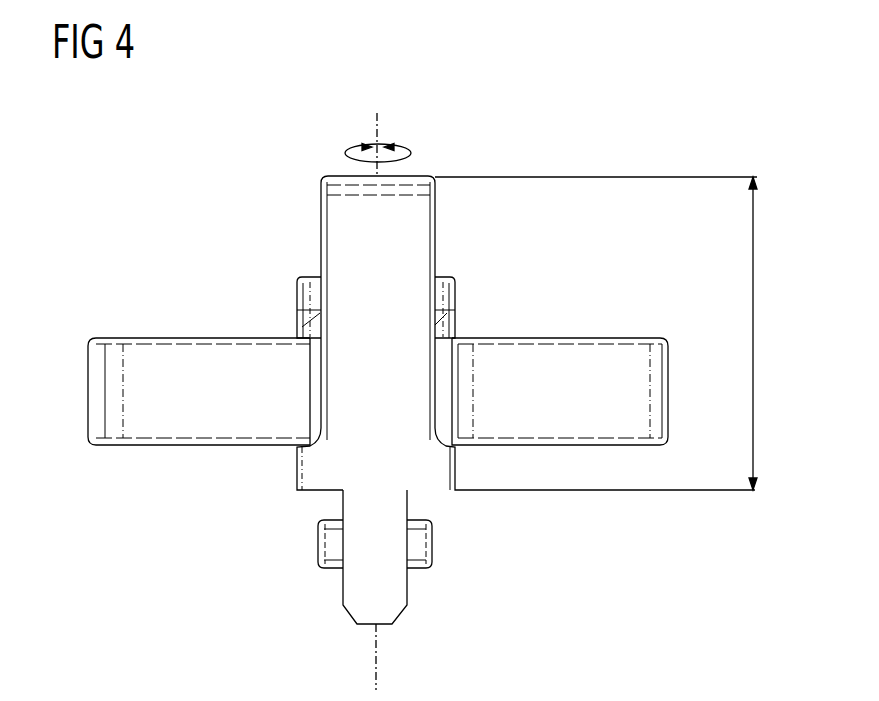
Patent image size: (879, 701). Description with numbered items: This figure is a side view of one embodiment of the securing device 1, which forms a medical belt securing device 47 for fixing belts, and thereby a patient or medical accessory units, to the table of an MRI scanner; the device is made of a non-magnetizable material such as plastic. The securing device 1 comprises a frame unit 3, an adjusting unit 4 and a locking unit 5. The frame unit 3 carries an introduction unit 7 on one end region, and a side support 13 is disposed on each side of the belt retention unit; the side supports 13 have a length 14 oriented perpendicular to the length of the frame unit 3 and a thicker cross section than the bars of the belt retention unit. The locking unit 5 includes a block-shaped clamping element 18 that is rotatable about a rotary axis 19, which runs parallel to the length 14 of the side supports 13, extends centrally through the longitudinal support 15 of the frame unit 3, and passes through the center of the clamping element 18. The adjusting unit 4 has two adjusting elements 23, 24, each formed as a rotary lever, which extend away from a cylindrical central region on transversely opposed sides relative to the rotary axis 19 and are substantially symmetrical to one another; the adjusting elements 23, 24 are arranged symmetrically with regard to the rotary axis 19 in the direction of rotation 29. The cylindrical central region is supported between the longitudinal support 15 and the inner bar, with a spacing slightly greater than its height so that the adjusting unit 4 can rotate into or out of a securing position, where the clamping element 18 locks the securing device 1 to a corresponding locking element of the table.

The securing device 1 is at (160, 190).
The frame unit 3 is at (302, 194).
The adjusting unit 4 is at (699, 338).
The locking unit 5 is at (448, 542).
The introduction unit 7 is at (352, 582).
The side support 13 is at (419, 221).
The length of the side supports 14 is at (753, 315).
The longitudinal support 15 is at (298, 478).
The clamping element 18 is at (327, 552).
The rotary axis 19 is at (376, 645).
The adjusting element 23 is at (562, 358).
The adjusting element 24 is at (175, 358).
The direction of rotation 29 is at (412, 155).
The medical belt securing device 47 is at (587, 521).